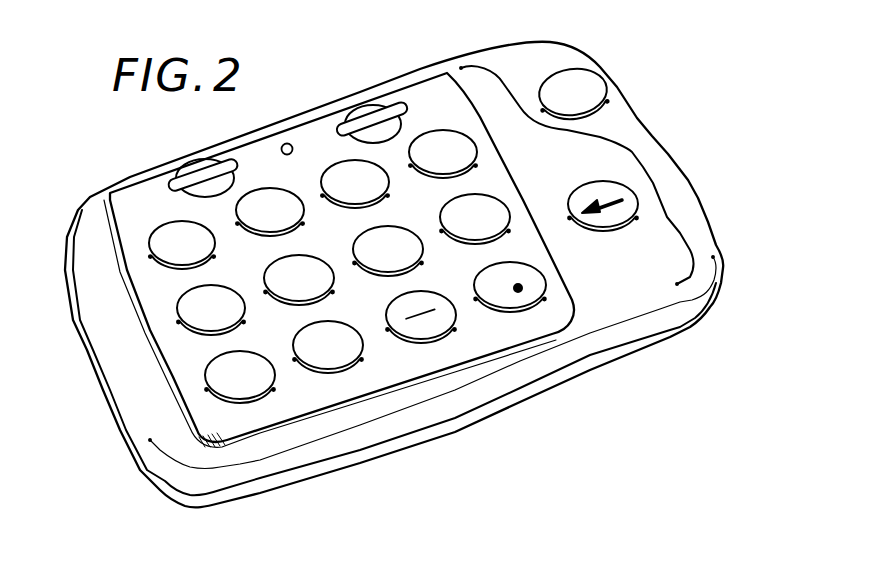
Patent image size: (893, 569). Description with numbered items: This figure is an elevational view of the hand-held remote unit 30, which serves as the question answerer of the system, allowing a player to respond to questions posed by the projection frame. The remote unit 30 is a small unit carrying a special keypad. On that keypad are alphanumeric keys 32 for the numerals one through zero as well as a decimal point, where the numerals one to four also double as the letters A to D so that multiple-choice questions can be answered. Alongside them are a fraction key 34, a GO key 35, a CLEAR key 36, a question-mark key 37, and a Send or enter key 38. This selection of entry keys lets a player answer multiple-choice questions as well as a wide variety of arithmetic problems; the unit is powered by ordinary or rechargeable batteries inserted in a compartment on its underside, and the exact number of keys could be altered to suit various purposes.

The hand-held remote unit 30 is at (680, 151).
The alphanumeric keys 32 is at (178, 298).
The fraction key 34 is at (452, 326).
The GO key 35 is at (600, 84).
The CLEAR key 36 is at (170, 186).
The ? key 37 is at (380, 112).
The Send (enter) key 38 is at (636, 208).